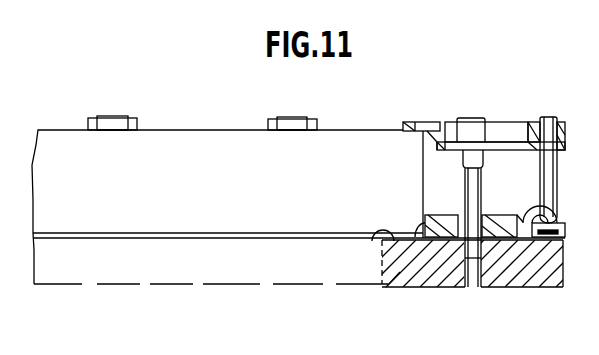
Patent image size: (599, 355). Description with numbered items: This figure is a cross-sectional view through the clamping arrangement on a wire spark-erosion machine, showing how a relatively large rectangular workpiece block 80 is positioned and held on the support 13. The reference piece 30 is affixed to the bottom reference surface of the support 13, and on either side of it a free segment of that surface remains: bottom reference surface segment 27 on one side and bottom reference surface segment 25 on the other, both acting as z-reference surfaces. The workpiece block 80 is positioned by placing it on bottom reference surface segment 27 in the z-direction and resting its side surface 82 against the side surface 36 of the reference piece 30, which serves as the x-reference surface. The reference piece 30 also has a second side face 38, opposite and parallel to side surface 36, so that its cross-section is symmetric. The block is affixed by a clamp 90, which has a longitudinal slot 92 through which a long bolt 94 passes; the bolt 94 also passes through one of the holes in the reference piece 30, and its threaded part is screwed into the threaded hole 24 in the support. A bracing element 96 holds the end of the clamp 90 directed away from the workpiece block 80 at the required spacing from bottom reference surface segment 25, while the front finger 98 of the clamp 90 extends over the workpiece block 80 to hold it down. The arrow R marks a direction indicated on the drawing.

The workpiece block 80 is at (212, 128).
The reference direction R is at (297, 232).
The bottom reference surface segment 27 is at (375, 235).
The side surface 36 is at (418, 238).
The front finger 98 is at (426, 123).
The side surface of the block 82 is at (424, 187).
The clamp 90 is at (494, 116).
The longitudinal slot 92 is at (529, 128).
The bracing element 96 is at (546, 128).
The bolt 94 is at (474, 178).
The threaded hole 24 is at (482, 270).
The reference piece 30 is at (502, 213).
The second side face 38 is at (548, 207).
The bottom reference surface segment 25 is at (562, 227).
The support 13 is at (566, 258).